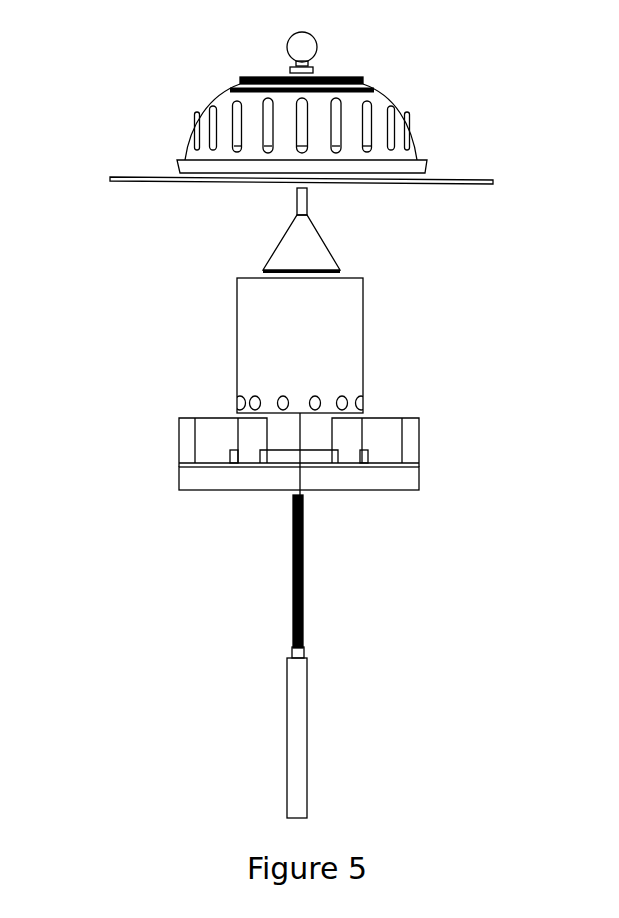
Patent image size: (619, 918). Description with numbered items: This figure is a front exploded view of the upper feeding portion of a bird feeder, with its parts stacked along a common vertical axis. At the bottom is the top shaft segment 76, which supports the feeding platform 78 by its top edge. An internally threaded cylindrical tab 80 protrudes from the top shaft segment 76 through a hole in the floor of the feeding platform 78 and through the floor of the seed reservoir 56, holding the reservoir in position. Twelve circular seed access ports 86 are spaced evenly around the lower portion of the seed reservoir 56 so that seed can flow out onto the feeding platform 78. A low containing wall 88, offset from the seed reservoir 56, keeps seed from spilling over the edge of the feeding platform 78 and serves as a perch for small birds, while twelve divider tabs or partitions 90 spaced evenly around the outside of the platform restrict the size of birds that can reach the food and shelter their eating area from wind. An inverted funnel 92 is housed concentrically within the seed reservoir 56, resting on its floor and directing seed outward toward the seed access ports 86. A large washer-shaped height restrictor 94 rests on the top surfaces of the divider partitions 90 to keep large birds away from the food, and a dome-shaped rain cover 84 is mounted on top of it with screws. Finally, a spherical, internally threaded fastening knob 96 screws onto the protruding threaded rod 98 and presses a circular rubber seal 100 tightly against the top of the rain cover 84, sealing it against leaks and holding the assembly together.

The seed reservoir 56 is at (275, 340).
The top shaft segment 76 is at (300, 733).
The feeding platform 78 is at (403, 478).
The internally threaded cylindrical tab 80 is at (291, 653).
The rain cover 84 is at (409, 117).
The seed access ports 86 is at (323, 402).
The low containing wall 88 is at (323, 462).
The divider tabs or partitions 90 is at (383, 440).
The inverted funnel 92 is at (328, 243).
The height restrictor 94 is at (133, 177).
The fastening knob 96 is at (284, 44).
The threaded rod 98 is at (293, 563).
The circular rubber seal 100 is at (318, 68).